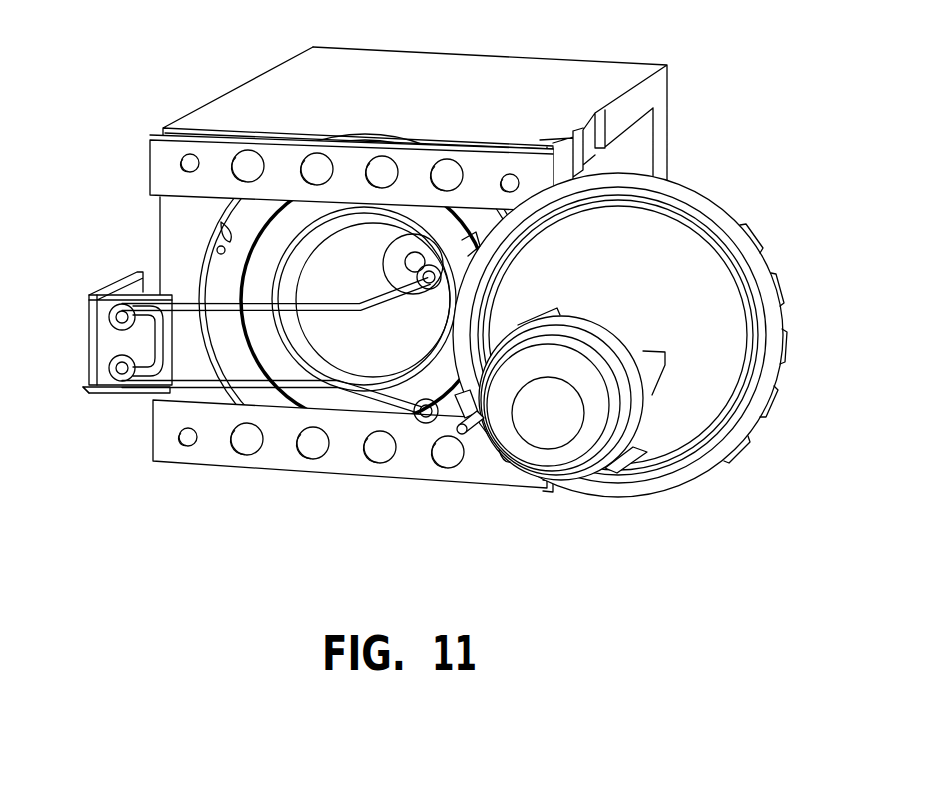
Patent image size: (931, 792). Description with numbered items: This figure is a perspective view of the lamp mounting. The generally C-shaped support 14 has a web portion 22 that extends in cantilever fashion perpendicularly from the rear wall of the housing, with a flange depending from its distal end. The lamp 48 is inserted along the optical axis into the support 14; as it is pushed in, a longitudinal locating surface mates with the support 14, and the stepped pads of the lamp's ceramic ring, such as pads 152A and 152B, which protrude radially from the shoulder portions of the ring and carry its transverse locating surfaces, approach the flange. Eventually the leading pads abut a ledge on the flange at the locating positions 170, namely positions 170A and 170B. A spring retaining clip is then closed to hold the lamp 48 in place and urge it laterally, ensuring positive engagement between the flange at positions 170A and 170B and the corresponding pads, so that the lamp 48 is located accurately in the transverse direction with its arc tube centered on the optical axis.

The support 14 is at (556, 44).
The web portion 22 is at (427, 106).
The lamp 48 is at (690, 423).
The stepped pad 152A is at (484, 248).
The stepped pad 152B is at (463, 407).
The spring clip 170 is at (203, 270).
The position on flange ledge 170A is at (232, 238).
The position on flange ledge 170B is at (237, 390).